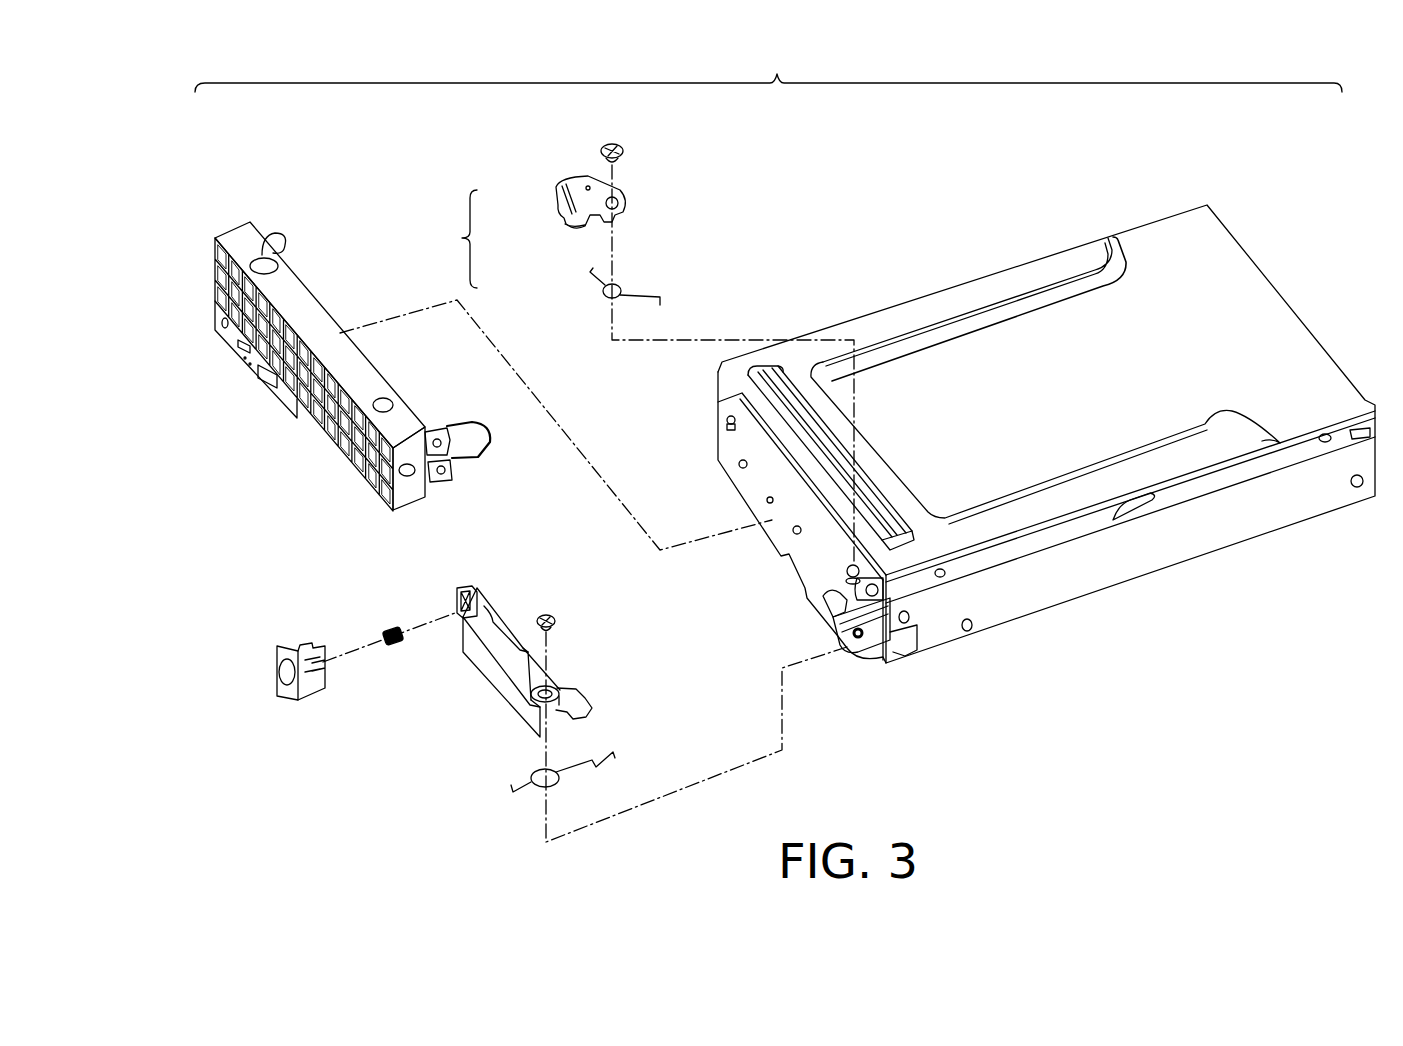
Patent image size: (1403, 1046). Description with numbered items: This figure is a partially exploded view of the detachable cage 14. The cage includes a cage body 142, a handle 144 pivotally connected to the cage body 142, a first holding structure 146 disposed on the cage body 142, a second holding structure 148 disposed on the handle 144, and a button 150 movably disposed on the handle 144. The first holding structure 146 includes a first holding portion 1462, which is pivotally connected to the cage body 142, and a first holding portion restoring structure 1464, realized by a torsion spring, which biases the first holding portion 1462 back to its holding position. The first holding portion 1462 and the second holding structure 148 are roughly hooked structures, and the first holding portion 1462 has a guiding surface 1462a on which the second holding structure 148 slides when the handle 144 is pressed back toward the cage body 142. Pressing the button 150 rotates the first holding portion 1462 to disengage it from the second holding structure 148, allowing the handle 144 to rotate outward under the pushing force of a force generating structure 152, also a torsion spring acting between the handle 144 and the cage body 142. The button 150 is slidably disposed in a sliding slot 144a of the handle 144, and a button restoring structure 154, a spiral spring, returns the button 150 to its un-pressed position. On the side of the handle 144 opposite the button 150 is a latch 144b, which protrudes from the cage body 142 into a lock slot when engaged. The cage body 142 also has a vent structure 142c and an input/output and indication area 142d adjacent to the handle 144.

The detachable cage 14 is at (768, 68).
The cage body 142 is at (1020, 338).
The vent structure 142c is at (306, 366).
The input/output and indication area 142d is at (253, 365).
The handle 144 is at (548, 642).
The sliding slot 144a is at (456, 593).
The latch 144b is at (588, 707).
The first holding structure 146 is at (537, 224).
The first holding portion 1462 is at (562, 208).
The guiding surface 1462a is at (578, 230).
The first holding portion restoring structure 1464 is at (588, 283).
The second holding structure 148 is at (525, 640).
The button 150 is at (287, 682).
The force generating structure 152 is at (528, 790).
The button restoring structure 154 is at (390, 628).